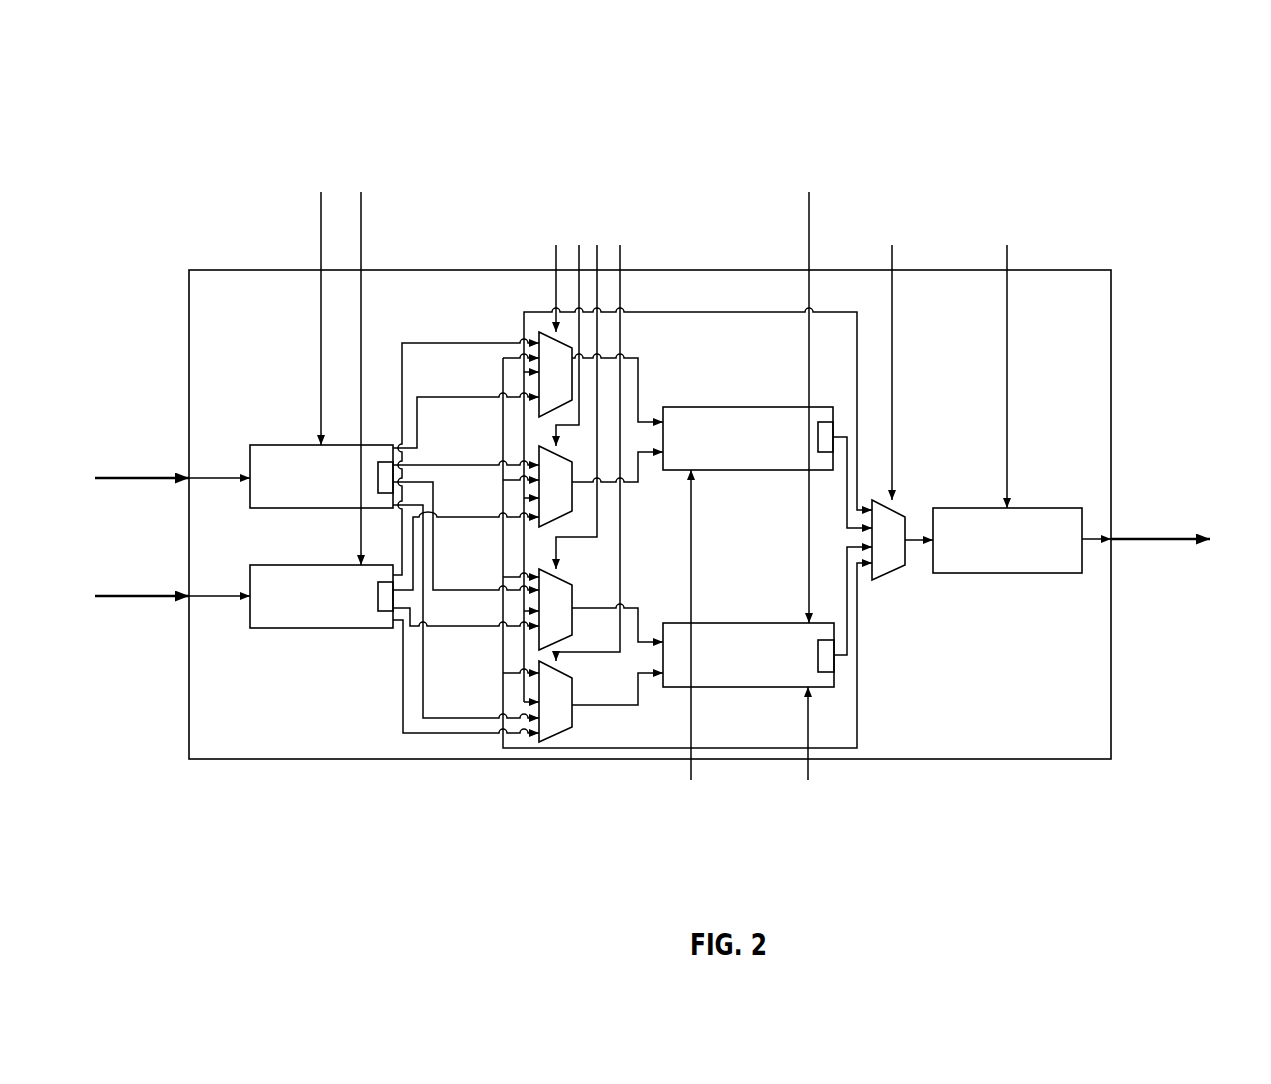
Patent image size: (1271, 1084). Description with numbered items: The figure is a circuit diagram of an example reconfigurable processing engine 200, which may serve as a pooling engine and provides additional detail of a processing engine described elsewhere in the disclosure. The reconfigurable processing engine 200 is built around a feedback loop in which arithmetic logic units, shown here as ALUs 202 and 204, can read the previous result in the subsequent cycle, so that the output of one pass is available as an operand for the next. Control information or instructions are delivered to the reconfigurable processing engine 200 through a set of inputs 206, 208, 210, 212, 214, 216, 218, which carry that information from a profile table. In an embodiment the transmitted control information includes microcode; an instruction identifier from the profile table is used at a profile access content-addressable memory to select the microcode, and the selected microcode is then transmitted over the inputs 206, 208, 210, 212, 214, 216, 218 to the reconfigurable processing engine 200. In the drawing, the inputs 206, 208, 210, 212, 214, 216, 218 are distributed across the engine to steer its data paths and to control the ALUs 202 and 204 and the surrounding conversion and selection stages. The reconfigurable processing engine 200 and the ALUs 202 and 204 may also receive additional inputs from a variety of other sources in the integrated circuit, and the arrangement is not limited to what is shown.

The reconfigurable processing engine 200 is at (186, 70).
The arithmetic logic unit 202 is at (787, 453).
The arithmetic logic unit 204 is at (790, 668).
The input 206 is at (323, 174).
The input 208 is at (573, 224).
The input 210 is at (796, 185).
The input 212 is at (875, 236).
The input 214 is at (990, 236).
The input 216 is at (678, 816).
The input 218 is at (796, 816).